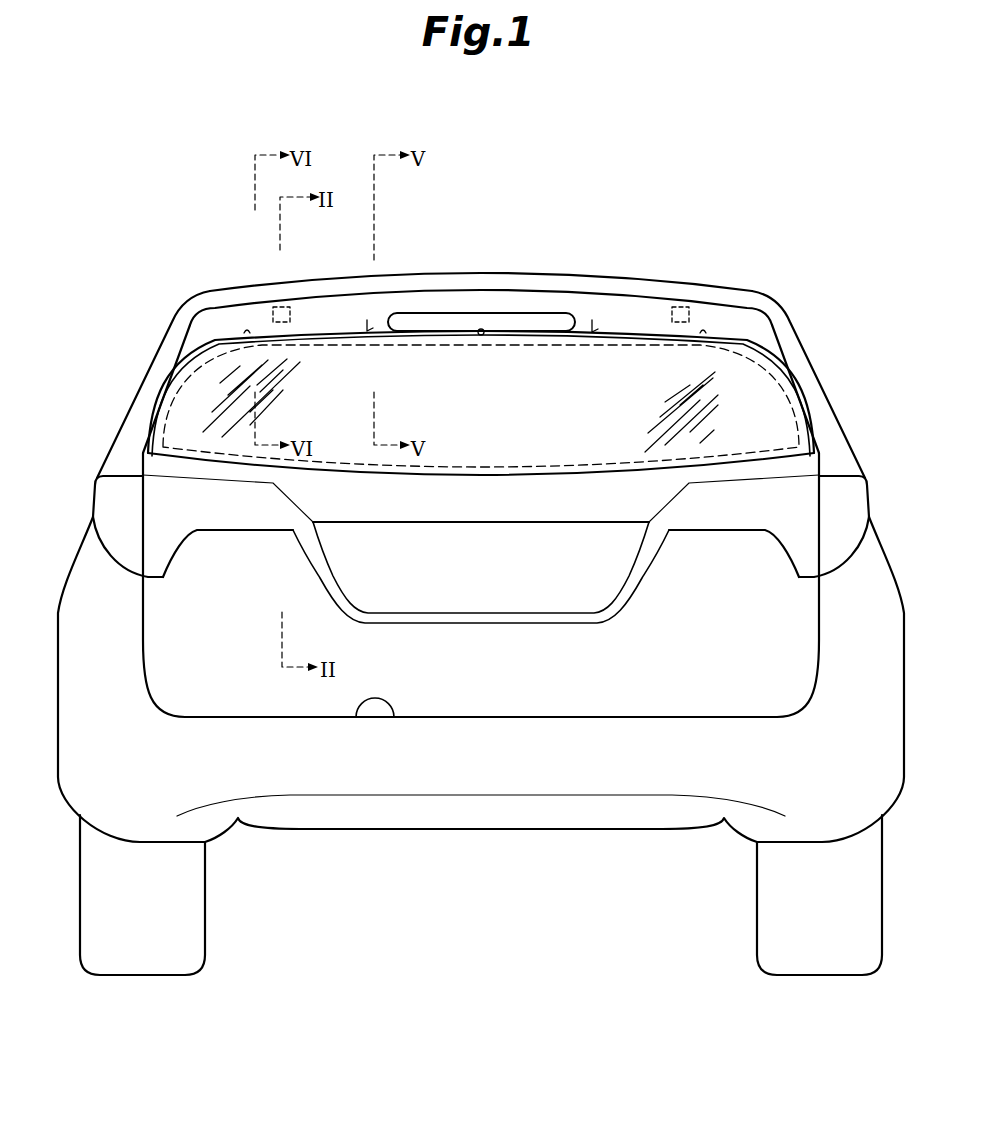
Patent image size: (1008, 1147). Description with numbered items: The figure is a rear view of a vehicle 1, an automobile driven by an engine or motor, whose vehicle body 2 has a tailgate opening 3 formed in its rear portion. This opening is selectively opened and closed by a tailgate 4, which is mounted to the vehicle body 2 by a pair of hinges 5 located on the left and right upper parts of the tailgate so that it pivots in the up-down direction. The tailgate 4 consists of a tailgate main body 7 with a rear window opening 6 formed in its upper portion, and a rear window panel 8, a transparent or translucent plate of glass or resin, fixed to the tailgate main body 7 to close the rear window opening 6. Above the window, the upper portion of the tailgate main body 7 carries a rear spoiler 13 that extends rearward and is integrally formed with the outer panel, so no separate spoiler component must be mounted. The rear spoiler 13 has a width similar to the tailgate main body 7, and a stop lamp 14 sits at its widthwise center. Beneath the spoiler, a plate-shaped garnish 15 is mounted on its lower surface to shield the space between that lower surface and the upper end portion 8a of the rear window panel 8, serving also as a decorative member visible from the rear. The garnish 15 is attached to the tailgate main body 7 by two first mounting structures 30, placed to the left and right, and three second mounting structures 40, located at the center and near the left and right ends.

The vehicle 1 is at (670, 197).
The vehicle body 2 is at (83, 563).
The tailgate opening 3 is at (393, 717).
The tailgate 4 is at (512, 724).
The hinges 5 is at (284, 306).
The rear window opening 6 is at (652, 346).
The tailgate main body 7 is at (622, 695).
The rear window panel 8 is at (523, 445).
The upper end portion of the rear window panel 8a is at (233, 337).
The rear spoiler 13 is at (453, 305).
The stop lamp 14 is at (553, 323).
The garnish 15 is at (433, 338).
The first mounting structures 30 is at (367, 330).
The second mounting structures 40 is at (250, 333).